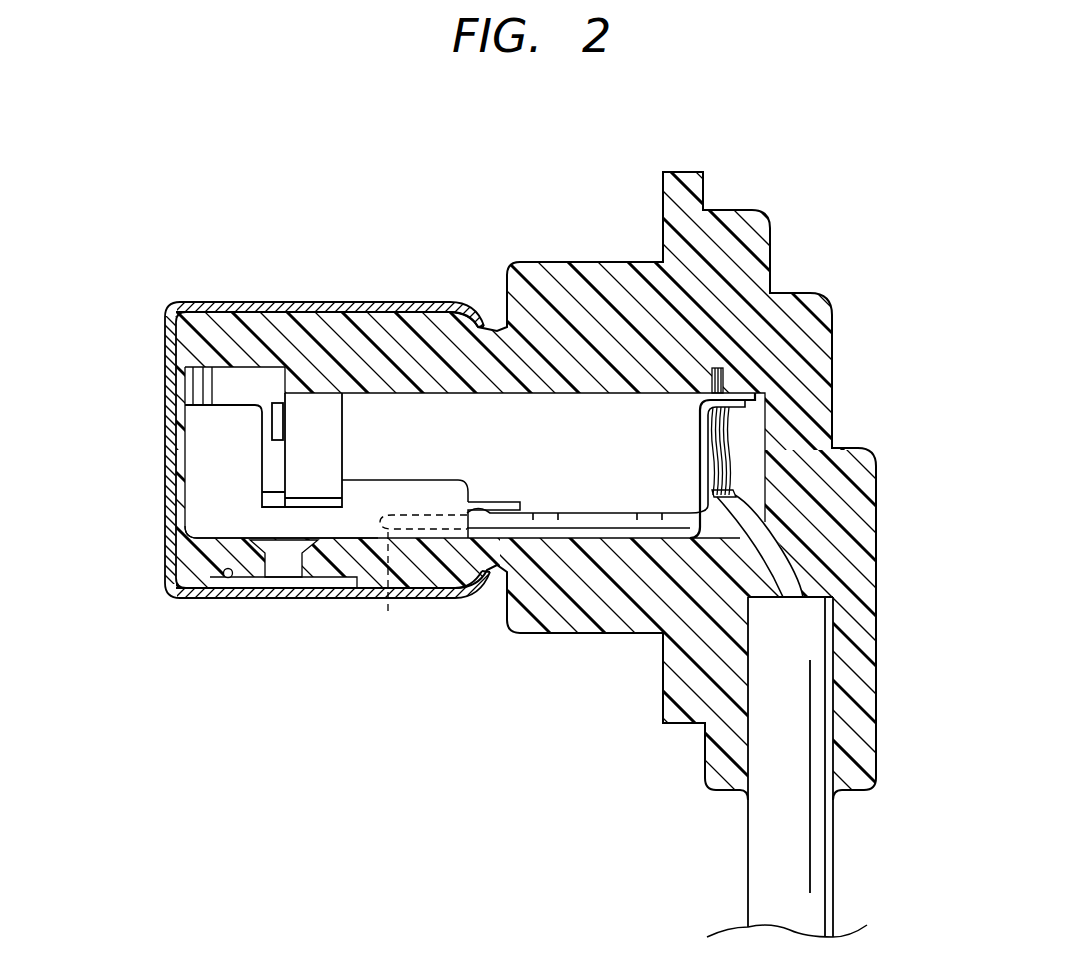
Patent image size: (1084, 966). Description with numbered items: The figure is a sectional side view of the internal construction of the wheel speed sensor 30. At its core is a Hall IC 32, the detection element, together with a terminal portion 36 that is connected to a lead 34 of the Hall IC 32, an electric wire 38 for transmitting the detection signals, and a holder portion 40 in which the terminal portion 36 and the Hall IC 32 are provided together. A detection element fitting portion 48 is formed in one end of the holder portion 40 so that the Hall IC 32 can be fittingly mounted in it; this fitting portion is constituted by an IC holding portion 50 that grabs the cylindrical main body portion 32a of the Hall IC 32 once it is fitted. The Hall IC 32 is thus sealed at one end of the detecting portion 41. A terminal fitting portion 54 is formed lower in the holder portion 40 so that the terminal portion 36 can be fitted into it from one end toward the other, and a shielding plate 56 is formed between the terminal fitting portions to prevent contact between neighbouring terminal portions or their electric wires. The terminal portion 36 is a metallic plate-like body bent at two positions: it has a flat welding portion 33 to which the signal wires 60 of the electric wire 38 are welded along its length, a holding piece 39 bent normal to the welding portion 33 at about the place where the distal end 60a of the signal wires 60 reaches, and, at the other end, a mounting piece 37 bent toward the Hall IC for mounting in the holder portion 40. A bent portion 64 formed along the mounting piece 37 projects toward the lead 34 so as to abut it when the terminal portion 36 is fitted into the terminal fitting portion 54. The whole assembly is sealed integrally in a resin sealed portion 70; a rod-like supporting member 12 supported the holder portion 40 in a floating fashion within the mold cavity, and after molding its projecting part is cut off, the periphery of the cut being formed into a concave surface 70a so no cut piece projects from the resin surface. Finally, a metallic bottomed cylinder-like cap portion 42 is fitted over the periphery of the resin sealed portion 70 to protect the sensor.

The wheel speed sensor 30 is at (818, 124).
The resin sealed portion 70 is at (528, 285).
The concave surface 70a is at (229, 580).
The detecting portion 41 is at (266, 450).
The cap portion 42 is at (163, 495).
The detection element fitting portion 48 is at (223, 362).
The Hall IC 32 is at (256, 373).
The cylindrical main body portion 32a is at (257, 390).
The holder portion 40 is at (393, 448).
The lead 34 is at (488, 512).
The bent portion 64 is at (490, 537).
The IC holding portion 50 is at (213, 505).
The supporting member 12 is at (285, 568).
The terminal fitting portion 54 is at (421, 579).
The terminal portion 36 is at (583, 502).
The mounting piece 37 is at (605, 530).
The shielding plate 56 is at (608, 423).
The holding piece 39 is at (745, 392).
The signal wires 60 is at (799, 365).
The distal end 60a is at (717, 387).
The welding portion 33 is at (707, 462).
The electric wire 38 is at (762, 878).